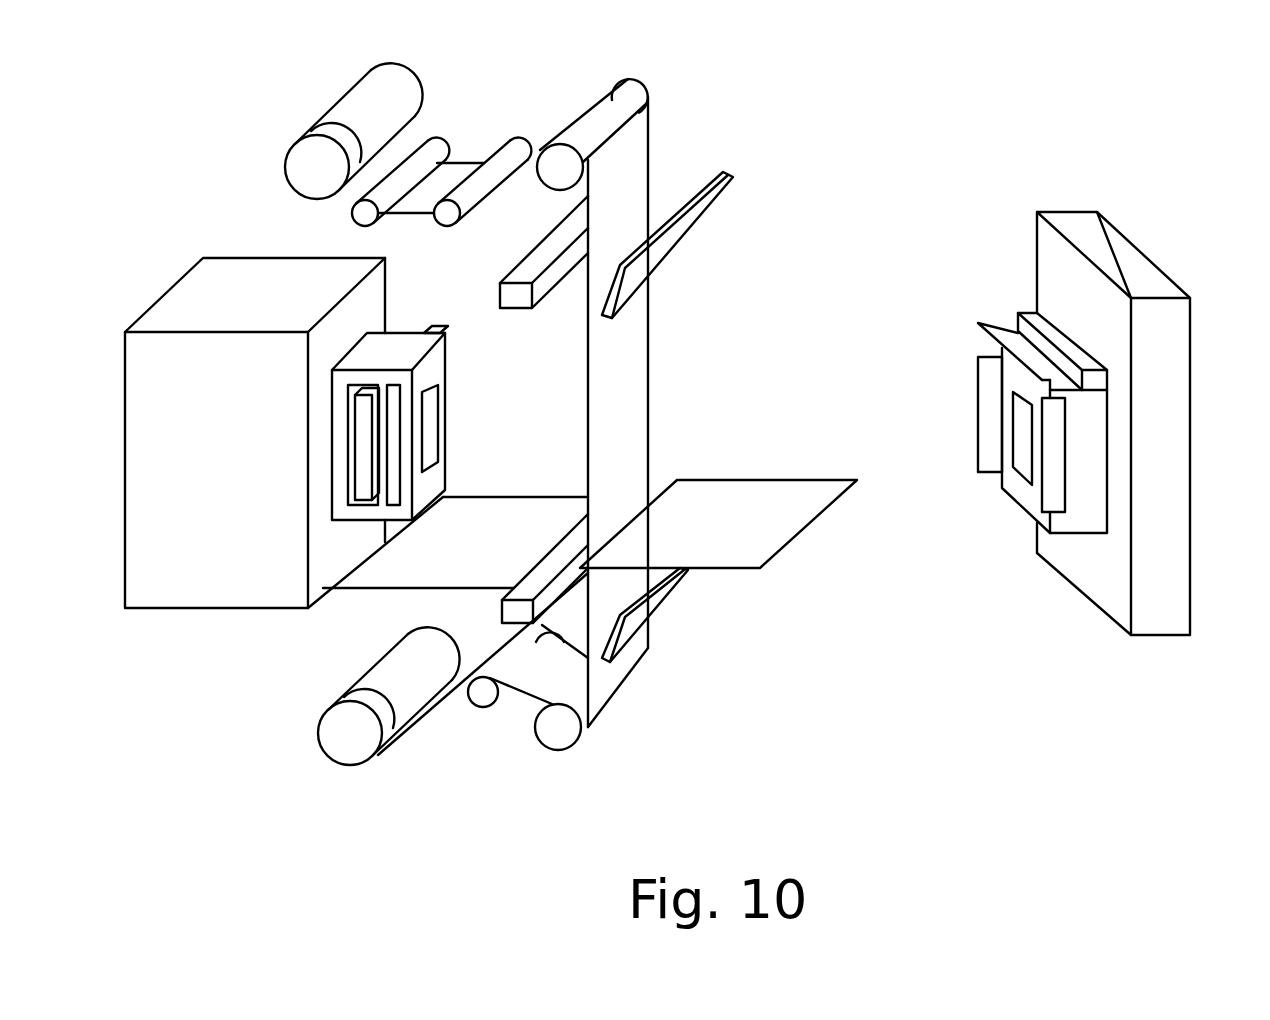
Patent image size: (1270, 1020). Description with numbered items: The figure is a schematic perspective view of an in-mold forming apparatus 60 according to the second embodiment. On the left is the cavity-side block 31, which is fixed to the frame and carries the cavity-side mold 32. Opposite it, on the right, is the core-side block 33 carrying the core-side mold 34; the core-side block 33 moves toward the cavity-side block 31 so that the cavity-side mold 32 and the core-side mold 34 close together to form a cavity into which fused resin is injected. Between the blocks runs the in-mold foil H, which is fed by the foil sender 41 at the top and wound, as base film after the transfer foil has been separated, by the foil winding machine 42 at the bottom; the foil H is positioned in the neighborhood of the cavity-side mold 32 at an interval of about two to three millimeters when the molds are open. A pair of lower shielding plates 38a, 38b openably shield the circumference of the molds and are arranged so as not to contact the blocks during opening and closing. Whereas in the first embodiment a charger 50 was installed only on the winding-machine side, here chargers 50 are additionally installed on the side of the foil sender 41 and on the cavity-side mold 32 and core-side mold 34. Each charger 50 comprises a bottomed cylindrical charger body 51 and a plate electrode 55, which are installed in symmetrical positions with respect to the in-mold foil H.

The in-mold forming apparatus 60 is at (779, 97).
The cavity-side block 31 is at (187, 603).
The cavity-side mold 32 is at (412, 331).
The charger body 51 is at (498, 292).
The foil sender 41 is at (300, 147).
The foil winding machine 42 is at (352, 760).
The in-mold foil H is at (632, 357).
The lower shielding plate 38a is at (372, 576).
The lower shielding plate 38b is at (744, 555).
The plate electrode 55 is at (707, 218).
The charger 50 is at (785, 172).
The core-side block 33 is at (1175, 447).
The core-side mold 34 is at (1077, 523).